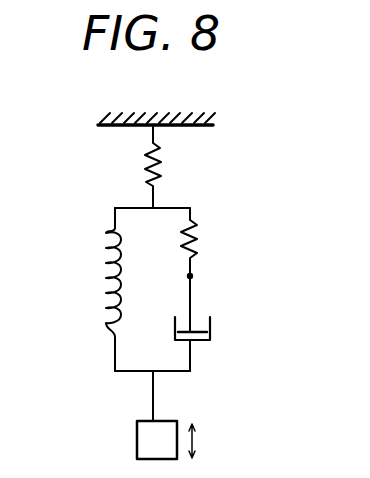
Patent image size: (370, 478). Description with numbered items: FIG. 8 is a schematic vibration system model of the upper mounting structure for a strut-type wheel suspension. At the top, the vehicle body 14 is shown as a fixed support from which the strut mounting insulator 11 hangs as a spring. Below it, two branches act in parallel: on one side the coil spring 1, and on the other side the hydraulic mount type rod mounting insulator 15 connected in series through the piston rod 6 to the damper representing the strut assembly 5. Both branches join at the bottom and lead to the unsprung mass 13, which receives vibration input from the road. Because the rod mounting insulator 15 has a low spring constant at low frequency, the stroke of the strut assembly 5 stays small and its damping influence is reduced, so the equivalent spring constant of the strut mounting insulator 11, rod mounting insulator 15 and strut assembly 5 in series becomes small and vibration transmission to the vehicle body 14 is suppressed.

The coil spring 1 is at (105, 285).
The strut assembly 5 is at (211, 328).
The piston rod 6 is at (192, 290).
The strut mounting insulator 11 is at (144, 166).
The unsprung mass 13 is at (136, 443).
The vehicle body 14 is at (193, 127).
The rod mounting insulator 15 is at (198, 245).